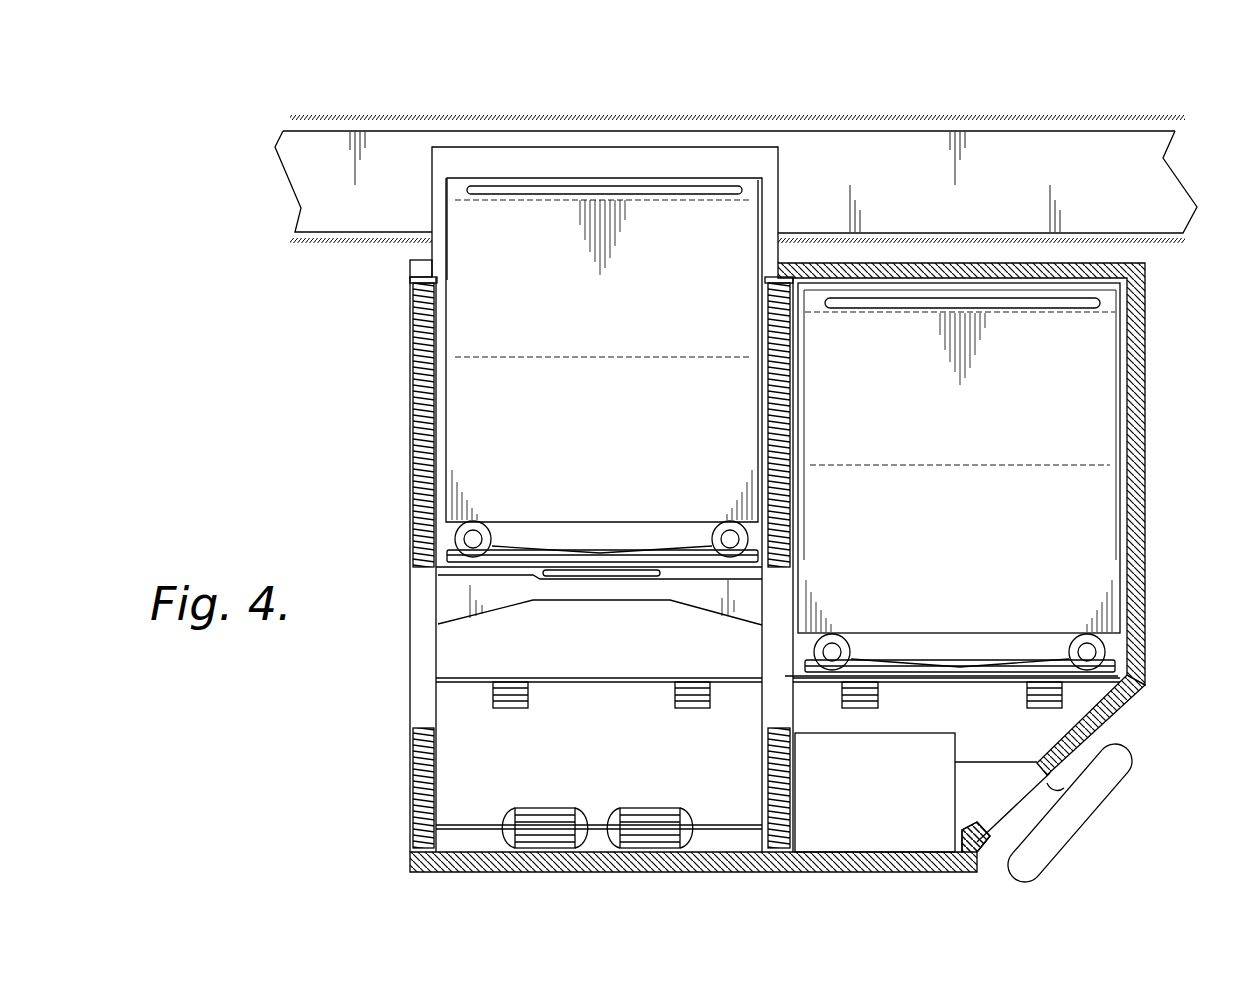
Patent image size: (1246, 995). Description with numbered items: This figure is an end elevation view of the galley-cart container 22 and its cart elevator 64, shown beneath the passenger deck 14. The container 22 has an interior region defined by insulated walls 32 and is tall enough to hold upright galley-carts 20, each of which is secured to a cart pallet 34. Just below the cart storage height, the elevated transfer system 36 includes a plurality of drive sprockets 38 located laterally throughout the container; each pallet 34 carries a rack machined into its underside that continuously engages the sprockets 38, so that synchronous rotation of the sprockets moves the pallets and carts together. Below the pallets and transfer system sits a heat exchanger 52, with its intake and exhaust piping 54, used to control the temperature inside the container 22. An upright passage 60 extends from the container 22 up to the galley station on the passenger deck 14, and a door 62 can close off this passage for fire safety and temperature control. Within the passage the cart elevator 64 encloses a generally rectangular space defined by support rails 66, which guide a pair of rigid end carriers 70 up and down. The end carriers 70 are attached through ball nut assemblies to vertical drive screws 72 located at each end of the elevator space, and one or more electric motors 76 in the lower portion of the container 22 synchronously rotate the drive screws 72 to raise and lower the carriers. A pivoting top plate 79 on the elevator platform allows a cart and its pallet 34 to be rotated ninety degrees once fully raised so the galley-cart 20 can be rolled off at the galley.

The passenger deck 14 is at (1185, 118).
The galley-carts 20 is at (513, 185).
The container 22 is at (1150, 338).
The insulated walls 32 is at (1118, 710).
The cart pallet 34 is at (440, 546).
The elevated transfer system 36 is at (560, 673).
The drive sprockets 38 is at (1030, 700).
The heat exchanger 52 is at (955, 800).
The intake and exhaust piping 54 is at (1097, 803).
The upright passage 60 is at (603, 112).
The door 62 is at (712, 150).
The cart elevator 64 is at (363, 422).
The support rails 66 is at (420, 488).
The end carriers 70 is at (500, 612).
The vertical drive screw 72 is at (420, 790).
The electric motors 76 is at (550, 808).
The pivoting top plate 79 is at (601, 570).